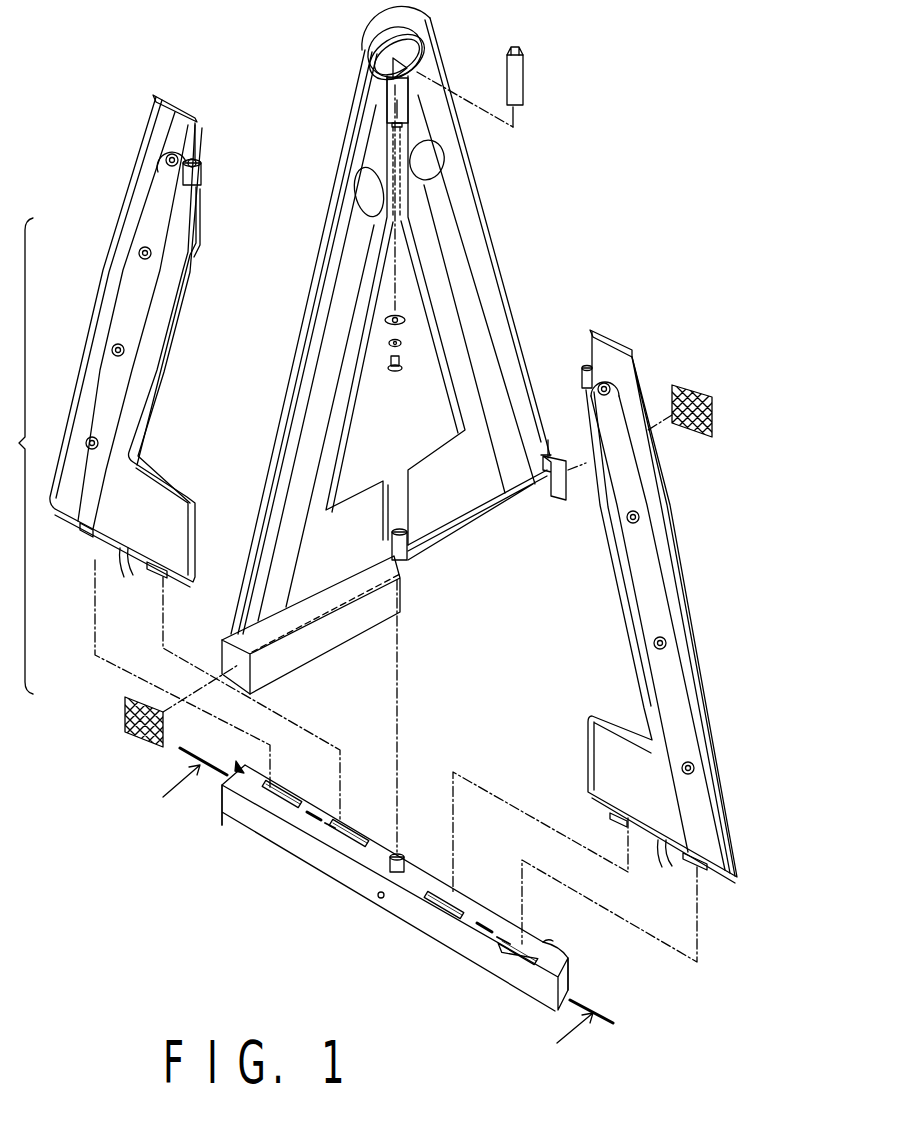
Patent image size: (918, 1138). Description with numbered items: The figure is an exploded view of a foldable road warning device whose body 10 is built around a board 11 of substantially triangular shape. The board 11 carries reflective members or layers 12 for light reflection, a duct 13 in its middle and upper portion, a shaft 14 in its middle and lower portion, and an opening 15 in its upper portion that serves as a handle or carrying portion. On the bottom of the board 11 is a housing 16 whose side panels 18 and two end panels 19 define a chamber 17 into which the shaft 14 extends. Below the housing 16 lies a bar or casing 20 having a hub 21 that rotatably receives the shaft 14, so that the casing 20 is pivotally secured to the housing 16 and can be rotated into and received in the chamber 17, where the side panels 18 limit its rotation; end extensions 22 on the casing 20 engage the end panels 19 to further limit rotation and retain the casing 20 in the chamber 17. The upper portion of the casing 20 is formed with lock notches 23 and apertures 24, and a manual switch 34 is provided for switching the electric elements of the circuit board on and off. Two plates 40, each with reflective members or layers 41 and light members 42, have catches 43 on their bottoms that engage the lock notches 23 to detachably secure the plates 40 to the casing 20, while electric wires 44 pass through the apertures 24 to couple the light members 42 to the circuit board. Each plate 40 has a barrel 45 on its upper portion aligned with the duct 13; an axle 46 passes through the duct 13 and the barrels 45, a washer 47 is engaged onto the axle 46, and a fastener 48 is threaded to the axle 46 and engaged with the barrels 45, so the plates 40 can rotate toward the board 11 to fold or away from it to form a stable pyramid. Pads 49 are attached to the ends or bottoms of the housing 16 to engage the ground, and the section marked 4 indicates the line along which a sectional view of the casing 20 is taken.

The section line 4- 4 is at (377, 915).
The body 10 is at (539, 190).
The board 11 is at (460, 170).
The reflective members or layers 12 is at (350, 260).
The duct 13 is at (388, 122).
The shaft 14 is at (403, 578).
The opening 15 is at (410, 50).
The housing 16 is at (551, 458).
The chamber 17 is at (475, 528).
The side panels 18 is at (315, 643).
The end panels 19 is at (563, 500).
The casing 20 is at (417, 925).
The hub 21 is at (399, 857).
The end extensions 22 is at (238, 766).
The lock notches 23 is at (228, 824).
The apertures 24 is at (305, 815).
The manual switch 34 is at (376, 900).
The plates 40 is at (123, 177).
The reflective members or layers 41 is at (130, 303).
The light members 42 is at (113, 348).
The catches 43 is at (87, 527).
The electric wires 44 is at (125, 548).
The barrel 45 is at (202, 177).
The axle 46 is at (522, 75).
The washer 47 is at (407, 322).
The fastener 48 is at (387, 367).
The pads 49 is at (127, 737).